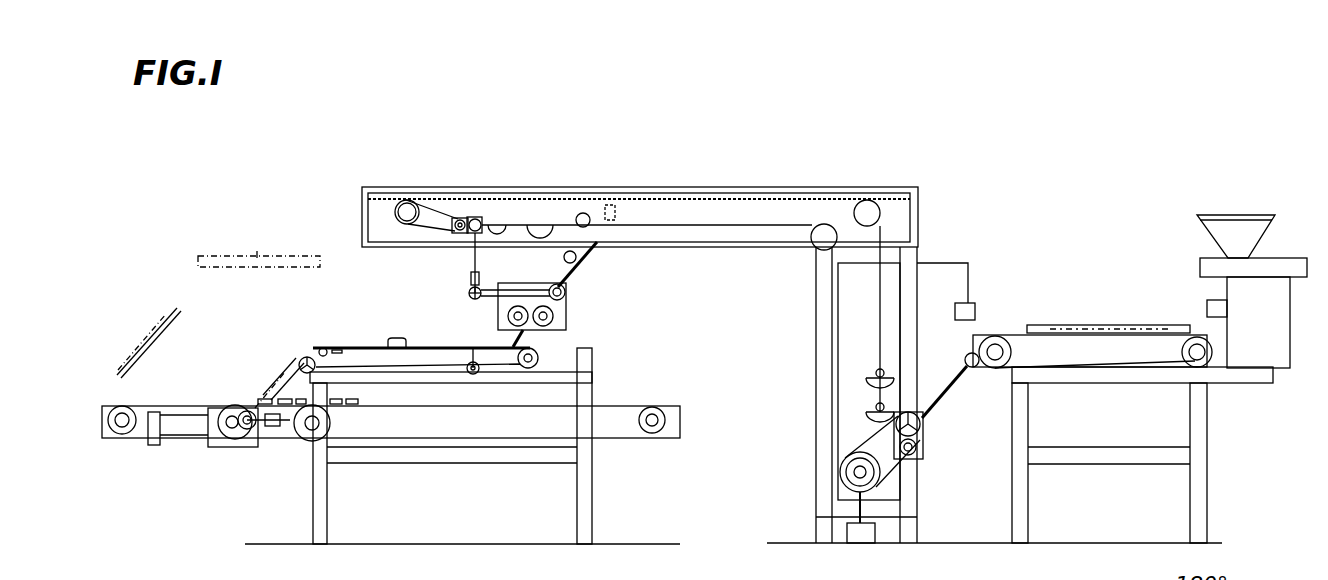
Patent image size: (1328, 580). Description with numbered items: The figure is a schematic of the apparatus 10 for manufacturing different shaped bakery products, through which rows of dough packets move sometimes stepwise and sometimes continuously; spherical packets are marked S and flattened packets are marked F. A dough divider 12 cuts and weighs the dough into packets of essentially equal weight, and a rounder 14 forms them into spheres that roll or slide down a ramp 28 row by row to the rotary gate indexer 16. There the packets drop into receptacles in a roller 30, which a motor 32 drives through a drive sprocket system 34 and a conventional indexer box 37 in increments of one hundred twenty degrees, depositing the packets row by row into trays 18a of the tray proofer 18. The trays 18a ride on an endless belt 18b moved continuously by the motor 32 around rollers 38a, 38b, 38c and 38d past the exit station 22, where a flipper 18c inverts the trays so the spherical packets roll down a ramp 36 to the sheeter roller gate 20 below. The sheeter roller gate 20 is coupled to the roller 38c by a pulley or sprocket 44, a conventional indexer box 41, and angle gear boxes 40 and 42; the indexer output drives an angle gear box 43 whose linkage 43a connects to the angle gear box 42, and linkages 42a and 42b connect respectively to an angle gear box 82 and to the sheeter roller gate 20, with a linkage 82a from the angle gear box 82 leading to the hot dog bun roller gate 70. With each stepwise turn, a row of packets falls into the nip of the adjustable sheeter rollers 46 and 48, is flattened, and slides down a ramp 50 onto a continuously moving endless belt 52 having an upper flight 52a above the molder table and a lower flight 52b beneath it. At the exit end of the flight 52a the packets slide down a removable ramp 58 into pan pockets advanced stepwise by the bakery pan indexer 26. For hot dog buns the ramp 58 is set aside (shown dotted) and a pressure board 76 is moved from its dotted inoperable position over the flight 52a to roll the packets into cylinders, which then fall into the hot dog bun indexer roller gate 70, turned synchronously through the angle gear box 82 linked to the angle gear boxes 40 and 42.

The apparatus 10 is at (690, 380).
The dough divider 12 is at (1192, 240).
The rounder 14 is at (1102, 310).
The rotary gate indexer 16 is at (948, 438).
The tray proofer 18 is at (746, 170).
The trays 18a is at (870, 376).
The endless belt 18b is at (790, 192).
The flipper 18c is at (610, 205).
The sheeter roller gate 20 is at (590, 292).
The exit station 22 is at (640, 258).
The bakery pan indexer 26 is at (218, 458).
The ramp 28 is at (945, 380).
The roller 30 is at (902, 452).
The motor 32 is at (846, 535).
The drive sprocket system 34 is at (888, 467).
The ramp 36 is at (557, 284).
The indexer box 37 is at (922, 408).
The roller 38a is at (843, 462).
The roller 38b is at (870, 212).
The roller 38c is at (396, 208).
The roller 38d is at (820, 248).
The angle gear box 40 is at (527, 192).
The indexer box 41 is at (462, 218).
The angle gear box 42 is at (469, 293).
The linkage 42a is at (396, 338).
The linkage 42b is at (481, 225).
The angle gear box 43 is at (476, 216).
The linkage 43a is at (452, 236).
The pulley or sprocket 44 is at (440, 220).
The sheeter roller 46 is at (535, 330).
The sheeter roller 48 is at (553, 316).
The ramp 50 is at (518, 345).
The endless belt 52 is at (447, 372).
The flight 52a is at (365, 347).
The flight 52b is at (405, 366).
The ramp 58 is at (155, 322).
The hot dog bun indexer roller gate 70 is at (300, 360).
The pressure board 76 is at (250, 245).
The angle gear box 82 is at (476, 374).
The roller support 82a is at (428, 375).
The flattened dough packet F is at (290, 370).
The spherical dough packet S is at (568, 250).